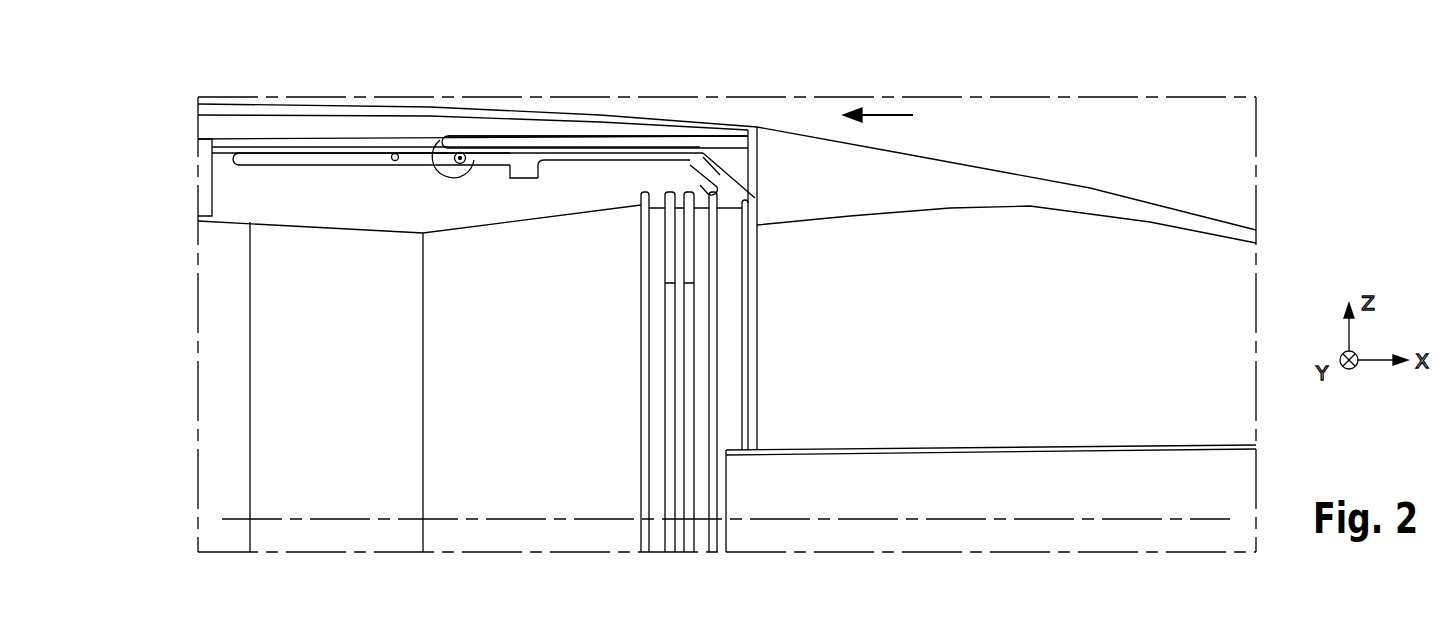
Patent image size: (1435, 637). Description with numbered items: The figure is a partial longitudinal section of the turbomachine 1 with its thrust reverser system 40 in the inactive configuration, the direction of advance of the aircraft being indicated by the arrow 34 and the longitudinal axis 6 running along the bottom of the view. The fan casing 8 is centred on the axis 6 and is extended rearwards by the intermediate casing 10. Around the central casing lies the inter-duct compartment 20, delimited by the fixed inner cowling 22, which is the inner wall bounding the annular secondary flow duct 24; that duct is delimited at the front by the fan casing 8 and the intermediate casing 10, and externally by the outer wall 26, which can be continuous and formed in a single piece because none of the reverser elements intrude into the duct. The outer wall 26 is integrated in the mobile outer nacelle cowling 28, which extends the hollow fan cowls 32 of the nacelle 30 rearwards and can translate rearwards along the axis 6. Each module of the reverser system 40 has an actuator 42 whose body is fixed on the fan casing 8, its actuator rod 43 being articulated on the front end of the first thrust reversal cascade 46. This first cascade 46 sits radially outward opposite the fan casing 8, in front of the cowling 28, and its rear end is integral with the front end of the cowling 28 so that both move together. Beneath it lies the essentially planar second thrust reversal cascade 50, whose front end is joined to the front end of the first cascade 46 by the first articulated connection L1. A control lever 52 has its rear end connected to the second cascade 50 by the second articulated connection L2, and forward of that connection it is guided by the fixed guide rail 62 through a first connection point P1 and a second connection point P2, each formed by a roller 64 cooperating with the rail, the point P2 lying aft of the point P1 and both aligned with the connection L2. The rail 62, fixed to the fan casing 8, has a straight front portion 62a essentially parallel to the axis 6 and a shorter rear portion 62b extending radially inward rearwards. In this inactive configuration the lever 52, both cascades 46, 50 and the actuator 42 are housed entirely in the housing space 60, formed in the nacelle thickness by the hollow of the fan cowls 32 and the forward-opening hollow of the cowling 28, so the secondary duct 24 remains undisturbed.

The turbomachine 1 is at (240, 92).
The longitudinal axis 6 is at (358, 519).
The fan casing 8 is at (325, 305).
The intermediate casing 10 is at (670, 548).
The inter-duct compartment 20 is at (1005, 475).
The fixed inner cowling 22 is at (823, 432).
The annular secondary flow duct 24 is at (1046, 349).
The outer wall of the secondary duct 26 is at (898, 213).
The mobile outer nacelle cowling 28 is at (792, 128).
The nacelle 30 is at (365, 100).
The fan cowls 32 is at (287, 105).
The direction of advance arrow 34 is at (887, 110).
The thrust reverser system 40 is at (643, 121).
The actuator 42 is at (184, 180).
The actuator rod 43 is at (250, 150).
The first thrust reversal cascade 46 is at (512, 143).
The second thrust reversal cascade 50 is at (593, 146).
The control lever 52 is at (406, 166).
The housing space 60 is at (573, 205).
The guide rail 62 is at (260, 162).
The straight front portion of the guide rail 62a is at (343, 160).
The rear portion of the guide rail 62b is at (705, 155).
The roller 64 is at (368, 147).
The first connection point P1 is at (395, 150).
The second connection point P2 is at (466, 172).
The first articulated connection L1 is at (470, 140).
The second articulated connection L2 is at (543, 165).